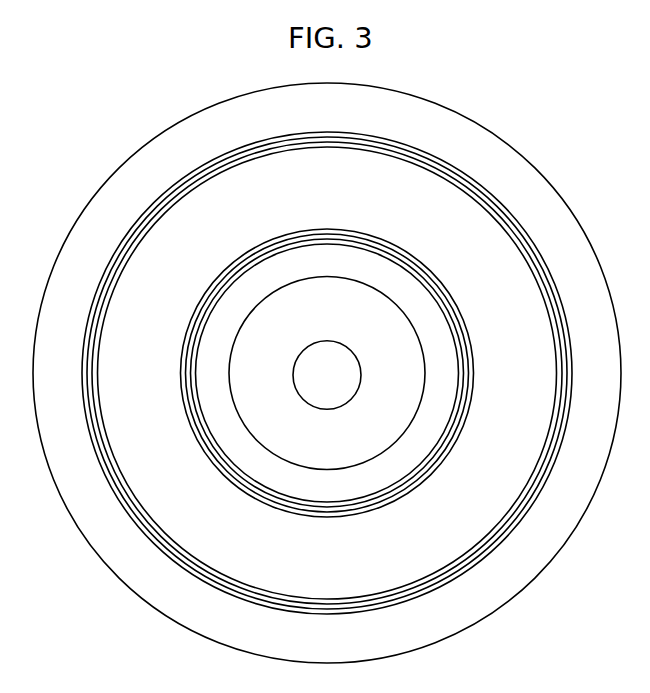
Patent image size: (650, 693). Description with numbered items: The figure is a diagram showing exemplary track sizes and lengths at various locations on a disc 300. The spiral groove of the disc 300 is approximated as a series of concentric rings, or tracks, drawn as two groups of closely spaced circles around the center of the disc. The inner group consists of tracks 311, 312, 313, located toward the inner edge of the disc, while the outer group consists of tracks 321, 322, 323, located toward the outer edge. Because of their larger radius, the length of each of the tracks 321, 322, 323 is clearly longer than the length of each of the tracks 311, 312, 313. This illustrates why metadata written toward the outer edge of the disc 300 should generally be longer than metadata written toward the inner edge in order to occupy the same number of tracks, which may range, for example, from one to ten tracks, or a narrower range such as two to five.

The disc 300 is at (452, 108).
The track 311 is at (198, 438).
The track 312 is at (221, 473).
The track 313 is at (252, 505).
The track 321 is at (440, 177).
The track 322 is at (467, 189).
The track 323 is at (495, 209).